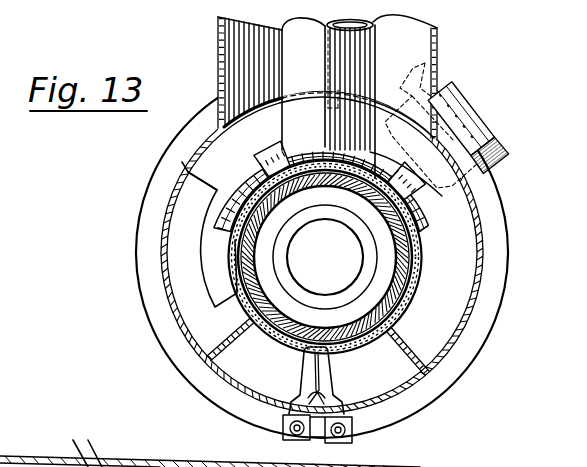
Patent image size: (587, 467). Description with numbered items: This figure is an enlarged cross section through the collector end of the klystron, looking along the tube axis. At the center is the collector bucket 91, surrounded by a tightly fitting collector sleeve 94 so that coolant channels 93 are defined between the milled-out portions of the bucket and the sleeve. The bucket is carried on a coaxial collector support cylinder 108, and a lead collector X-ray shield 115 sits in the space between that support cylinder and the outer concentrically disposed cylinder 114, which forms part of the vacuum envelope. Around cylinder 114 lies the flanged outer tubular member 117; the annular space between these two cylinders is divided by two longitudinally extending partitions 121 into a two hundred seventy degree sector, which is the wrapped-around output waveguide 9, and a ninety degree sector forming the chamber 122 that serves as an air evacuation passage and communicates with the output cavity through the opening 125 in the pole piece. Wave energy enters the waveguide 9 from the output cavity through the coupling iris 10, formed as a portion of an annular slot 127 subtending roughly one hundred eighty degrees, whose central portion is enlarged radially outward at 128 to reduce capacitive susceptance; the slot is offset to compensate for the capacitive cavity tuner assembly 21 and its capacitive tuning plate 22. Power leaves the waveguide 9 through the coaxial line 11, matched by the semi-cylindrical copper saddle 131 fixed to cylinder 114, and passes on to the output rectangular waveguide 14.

The hollow waveguide 9 is at (457, 240).
The coupling iris 10 is at (225, 204).
The coaxial line 11 is at (446, 39).
The output rectangular waveguide 14 is at (112, 457).
The capacitive cavity tuner assembly 21 is at (511, 143).
The capacitive tuning plate 22 is at (432, 262).
The collector bucket 91 is at (283, 318).
The coolant channels 93 is at (305, 340).
The collector sleeve 94 is at (373, 225).
The collector support cylinder 108 is at (391, 292).
The outer concentrically disposed cylinder 114 is at (352, 338).
The collector X-ray shield 115 is at (248, 302).
The outer tubular member 117 is at (469, 313).
The longitudinally extending partitions 121 is at (208, 345).
The chamber 122 is at (273, 386).
The opening 125 is at (333, 391).
The annular slot 127 is at (213, 248).
The radially enlarged central portion 128 is at (207, 167).
The saddle 131 is at (265, 159).